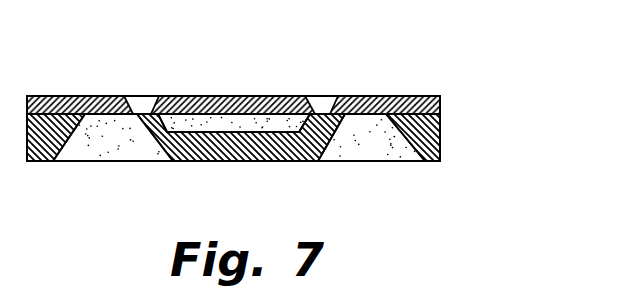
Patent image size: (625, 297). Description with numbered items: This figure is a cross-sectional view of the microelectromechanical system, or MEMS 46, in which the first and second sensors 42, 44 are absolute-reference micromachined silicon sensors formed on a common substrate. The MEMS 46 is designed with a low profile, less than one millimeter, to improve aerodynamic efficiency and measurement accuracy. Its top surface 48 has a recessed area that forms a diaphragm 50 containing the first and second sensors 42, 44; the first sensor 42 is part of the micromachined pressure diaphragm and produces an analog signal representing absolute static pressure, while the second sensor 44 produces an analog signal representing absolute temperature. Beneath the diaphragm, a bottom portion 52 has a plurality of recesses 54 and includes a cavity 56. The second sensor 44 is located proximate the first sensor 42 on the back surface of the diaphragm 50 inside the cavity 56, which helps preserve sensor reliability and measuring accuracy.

The first sensor 42 is at (185, 97).
The second sensor 44 is at (272, 97).
The microelectromechanical system (MEMS) 46 is at (472, 110).
The top surface 48 is at (400, 97).
The diaphragm 50 is at (141, 97).
The bottom portion 52 is at (193, 158).
The recesses 54 is at (89, 137).
The cavity 56 is at (265, 125).